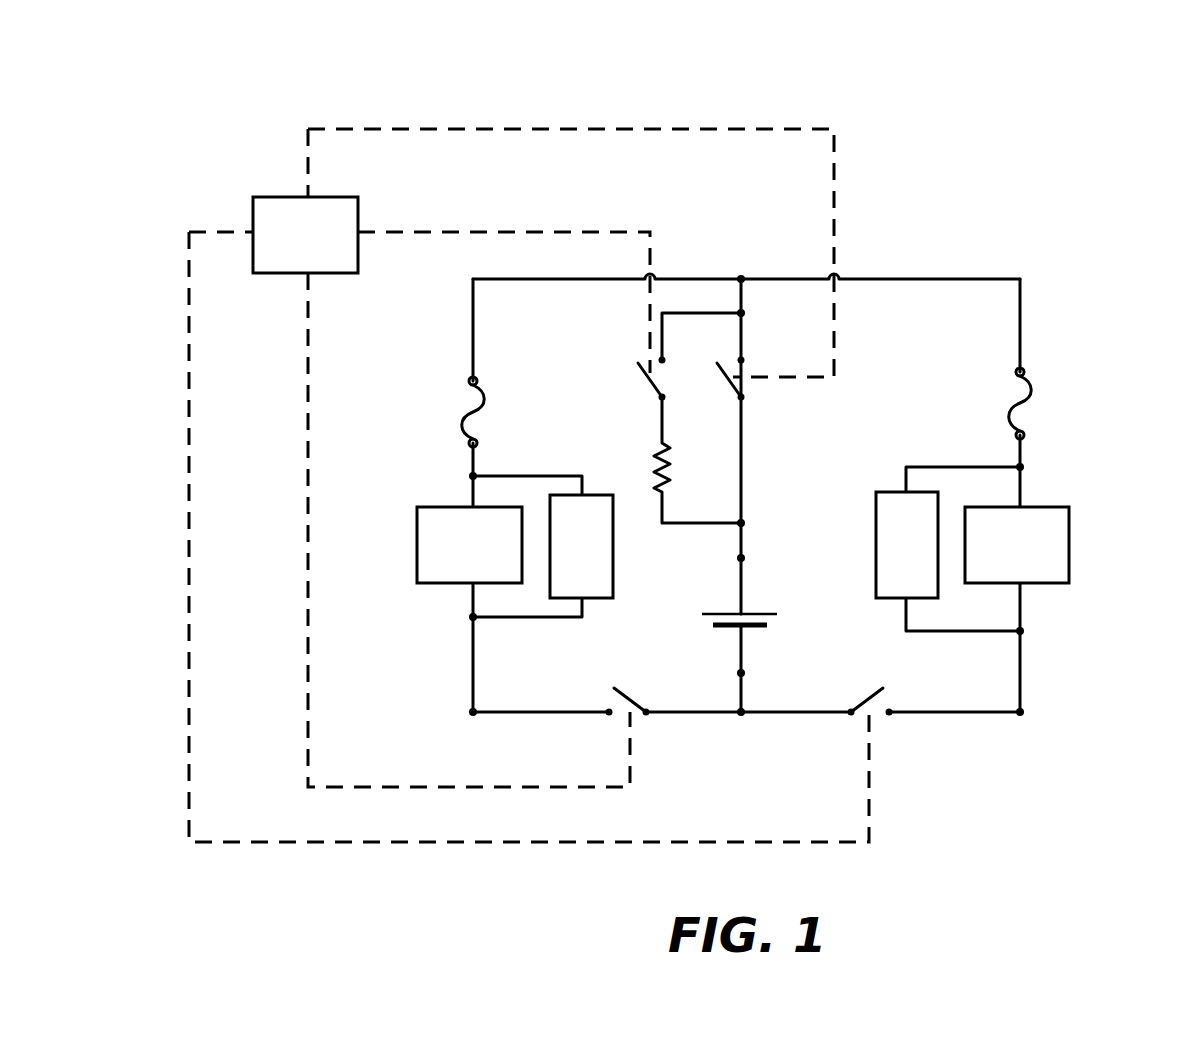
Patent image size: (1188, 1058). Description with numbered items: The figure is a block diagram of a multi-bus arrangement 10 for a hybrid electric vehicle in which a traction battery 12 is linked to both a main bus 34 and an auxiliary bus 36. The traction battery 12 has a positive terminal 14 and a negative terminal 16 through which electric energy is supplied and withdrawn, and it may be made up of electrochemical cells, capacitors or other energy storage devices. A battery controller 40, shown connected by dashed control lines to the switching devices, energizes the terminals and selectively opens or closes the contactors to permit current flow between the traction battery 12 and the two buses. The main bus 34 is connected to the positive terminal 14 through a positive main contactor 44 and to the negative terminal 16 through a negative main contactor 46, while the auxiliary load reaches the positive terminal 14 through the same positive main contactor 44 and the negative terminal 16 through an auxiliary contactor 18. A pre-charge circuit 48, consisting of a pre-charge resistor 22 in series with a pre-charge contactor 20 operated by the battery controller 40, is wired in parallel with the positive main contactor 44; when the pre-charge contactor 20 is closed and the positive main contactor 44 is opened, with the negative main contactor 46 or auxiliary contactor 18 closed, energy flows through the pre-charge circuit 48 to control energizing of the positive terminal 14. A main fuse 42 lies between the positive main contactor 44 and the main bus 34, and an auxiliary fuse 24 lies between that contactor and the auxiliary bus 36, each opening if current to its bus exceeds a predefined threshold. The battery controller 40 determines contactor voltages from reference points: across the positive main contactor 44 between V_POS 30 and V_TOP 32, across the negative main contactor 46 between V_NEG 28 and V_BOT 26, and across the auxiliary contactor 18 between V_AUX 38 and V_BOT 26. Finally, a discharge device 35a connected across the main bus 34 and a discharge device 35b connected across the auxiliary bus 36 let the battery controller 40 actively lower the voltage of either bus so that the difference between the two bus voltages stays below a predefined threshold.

The multi-bus arrangement 10 is at (1088, 95).
The traction battery 12 is at (742, 613).
The positive terminal 14 is at (714, 612).
The negative terminal 16 is at (722, 630).
The auxiliary contactor 18 is at (615, 691).
The pre-charge contactor 20 is at (648, 380).
The pre-charge resistor 22 is at (670, 456).
The auxiliary fuse 24 is at (468, 410).
The V_BOT reference point 26 is at (748, 674).
The V_NEG reference point 28 is at (1025, 712).
The V_POS reference point 30 is at (737, 276).
The V_TOP reference point 32 is at (745, 557).
The main bus 34 is at (1040, 505).
The discharge device 35a is at (890, 490).
The discharge device 35b is at (613, 543).
The auxiliary bus 36 is at (448, 505).
The V_AUX reference point 38 is at (468, 712).
The battery controller 40 is at (285, 197).
The main fuse 42 is at (1030, 385).
The positive main contactor 44 is at (742, 384).
The negative main contactor 46 is at (875, 698).
The pre-charge circuit 48 is at (634, 416).